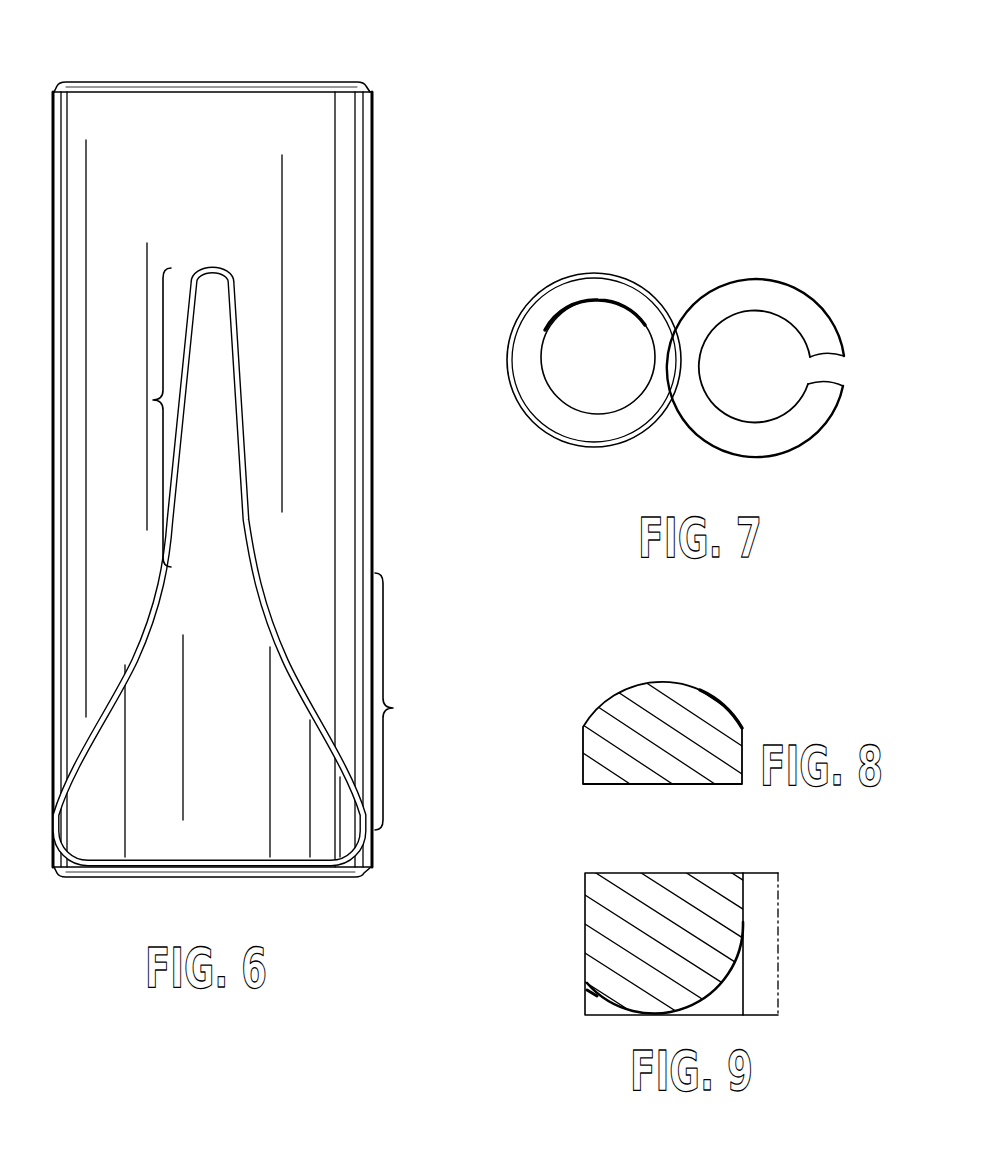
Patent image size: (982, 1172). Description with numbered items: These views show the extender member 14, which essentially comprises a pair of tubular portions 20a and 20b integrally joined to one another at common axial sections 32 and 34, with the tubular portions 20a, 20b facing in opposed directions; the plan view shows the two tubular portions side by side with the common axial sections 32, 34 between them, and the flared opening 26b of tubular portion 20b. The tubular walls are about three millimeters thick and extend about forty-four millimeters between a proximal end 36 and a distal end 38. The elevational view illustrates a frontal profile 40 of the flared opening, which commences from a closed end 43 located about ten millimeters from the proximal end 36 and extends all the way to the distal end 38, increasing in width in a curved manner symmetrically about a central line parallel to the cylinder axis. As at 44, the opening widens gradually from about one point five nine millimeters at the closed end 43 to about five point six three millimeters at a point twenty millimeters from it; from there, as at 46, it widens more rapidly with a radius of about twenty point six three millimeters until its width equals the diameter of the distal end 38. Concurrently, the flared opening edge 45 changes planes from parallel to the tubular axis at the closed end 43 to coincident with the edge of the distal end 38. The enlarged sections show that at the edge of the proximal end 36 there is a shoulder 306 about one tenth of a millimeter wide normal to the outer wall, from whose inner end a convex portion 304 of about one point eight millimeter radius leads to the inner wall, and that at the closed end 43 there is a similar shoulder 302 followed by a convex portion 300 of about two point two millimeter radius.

In FIG. 6, the extender member 14 is at (244, 485).
In FIG. 7, the extender member 14 is at (685, 390).
In FIG. 6, the proximal end 36 is at (82, 82).
In FIG. 6, the distal end 38 is at (314, 879).
In FIG. 6, the frontal profile 40 is at (248, 538).
In FIG. 6, the closed end 43 is at (212, 265).
In FIG. 6, the gradual widening region of flared opening 44 is at (142, 417).
In FIG. 6, the flared opening edge 45 is at (78, 768).
In FIG. 6, the rapid widening region of flared opening 46 is at (407, 701).
In FIG. 7, the tubular portion 20a is at (570, 360).
In FIG. 7, the tubular portion 20b is at (789, 374).
In FIG. 7, the common axial section 32 is at (656, 362).
In FIG. 7, the common axial section 34 is at (684, 377).
In FIG. 7, the flared opening 26b is at (847, 368).
In FIG. 9, the convex portion 300 is at (712, 990).
In FIG. 9, the shoulder 302 is at (586, 1000).
In FIG. 8, the convex portion 304 is at (675, 682).
In FIG. 8, the shoulder 306 is at (584, 727).